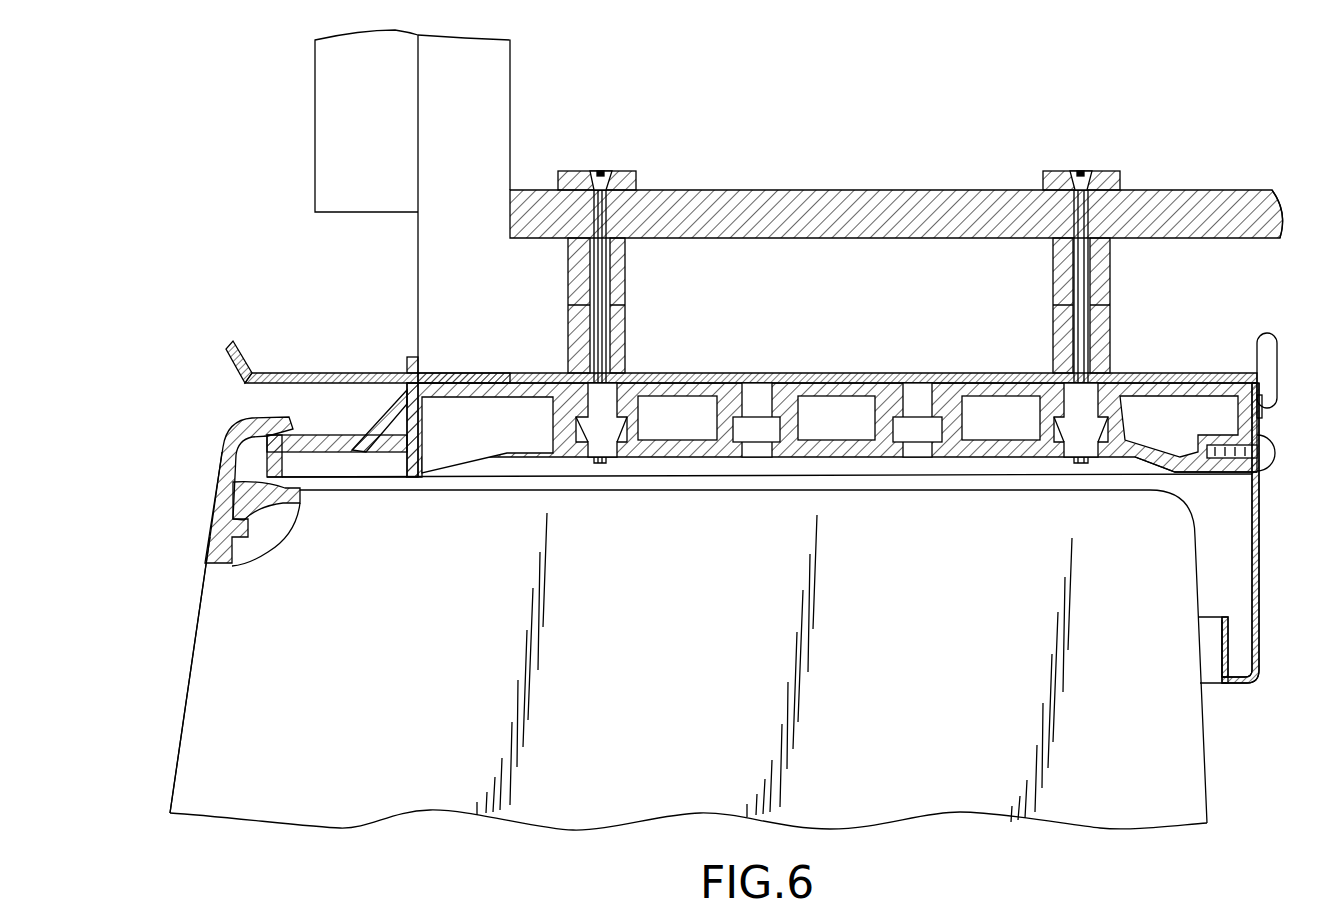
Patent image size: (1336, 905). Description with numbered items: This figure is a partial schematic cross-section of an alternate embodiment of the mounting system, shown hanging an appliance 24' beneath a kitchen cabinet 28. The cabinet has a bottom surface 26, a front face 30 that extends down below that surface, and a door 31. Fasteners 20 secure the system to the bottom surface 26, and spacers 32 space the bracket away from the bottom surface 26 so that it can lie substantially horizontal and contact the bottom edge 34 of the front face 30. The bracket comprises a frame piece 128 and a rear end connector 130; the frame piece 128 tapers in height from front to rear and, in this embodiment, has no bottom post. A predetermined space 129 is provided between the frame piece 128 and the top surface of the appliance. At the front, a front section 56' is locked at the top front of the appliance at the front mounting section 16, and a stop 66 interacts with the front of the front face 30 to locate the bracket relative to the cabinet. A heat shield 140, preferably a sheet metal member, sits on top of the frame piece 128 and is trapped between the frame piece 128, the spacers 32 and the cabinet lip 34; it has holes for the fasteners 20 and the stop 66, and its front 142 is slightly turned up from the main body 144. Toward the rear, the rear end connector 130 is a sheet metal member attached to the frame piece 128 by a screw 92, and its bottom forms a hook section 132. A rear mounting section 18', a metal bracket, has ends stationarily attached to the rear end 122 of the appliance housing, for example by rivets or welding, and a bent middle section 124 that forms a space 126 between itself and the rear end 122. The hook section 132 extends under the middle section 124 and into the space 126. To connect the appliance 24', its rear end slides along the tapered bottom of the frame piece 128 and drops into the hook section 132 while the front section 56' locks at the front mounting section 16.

The front mounting section 16 is at (231, 433).
The rear mounting section 18' is at (1223, 624).
The fasteners 20 is at (620, 172).
The appliance 24' is at (221, 632).
The bottom surface 26 is at (842, 190).
The kitchen cabinet 28 is at (1280, 207).
The front face 30 is at (502, 98).
The door 31 is at (320, 104).
The spacers 32 is at (625, 282).
The bottom edge 34 is at (470, 370).
The front section 56' is at (342, 430).
The stop 66 is at (406, 360).
The screw 92 is at (1276, 452).
The rear end 122 is at (1208, 807).
The middle section 124 is at (1293, 501).
The space 126 is at (1206, 662).
The frame piece 128 is at (843, 385).
The predetermined space 129 is at (878, 482).
The rear end connector 130 is at (1262, 528).
The hook section 132 is at (1240, 686).
The heat shield 140 is at (1000, 373).
The front 142 is at (246, 357).
The main body 144 is at (672, 373).